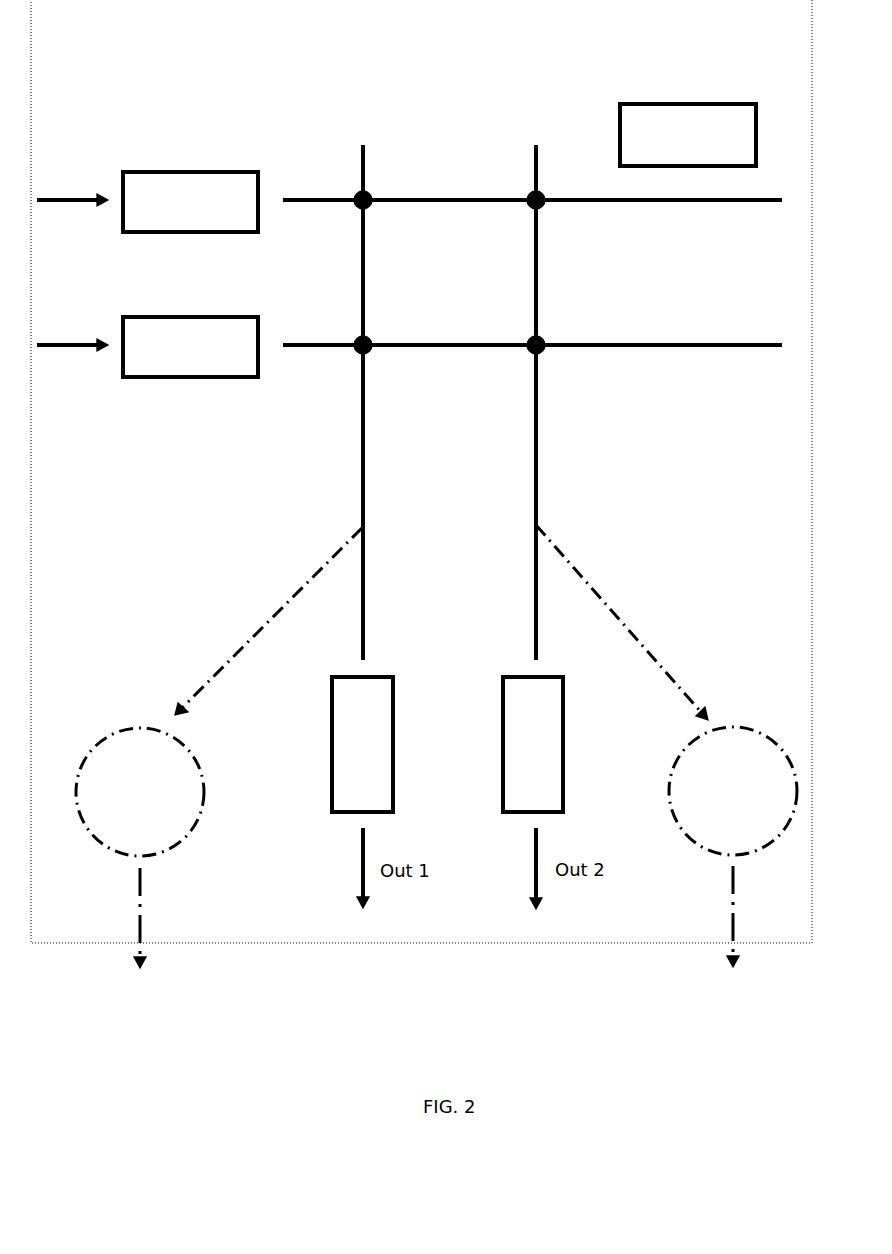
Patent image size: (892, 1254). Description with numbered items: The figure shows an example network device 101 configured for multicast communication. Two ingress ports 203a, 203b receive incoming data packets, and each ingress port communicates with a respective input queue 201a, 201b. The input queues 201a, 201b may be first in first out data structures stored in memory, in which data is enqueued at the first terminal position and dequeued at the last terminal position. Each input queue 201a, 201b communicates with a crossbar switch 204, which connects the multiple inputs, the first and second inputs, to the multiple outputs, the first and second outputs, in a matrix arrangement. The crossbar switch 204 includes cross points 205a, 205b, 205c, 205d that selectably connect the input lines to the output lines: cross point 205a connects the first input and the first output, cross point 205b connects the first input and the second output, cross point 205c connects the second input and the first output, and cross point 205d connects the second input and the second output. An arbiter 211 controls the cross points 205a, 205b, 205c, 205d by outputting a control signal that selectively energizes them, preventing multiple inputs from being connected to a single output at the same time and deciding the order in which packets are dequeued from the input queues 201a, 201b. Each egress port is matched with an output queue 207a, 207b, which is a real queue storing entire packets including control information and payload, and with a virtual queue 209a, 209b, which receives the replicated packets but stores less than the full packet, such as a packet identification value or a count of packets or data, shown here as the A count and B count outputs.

The network device 101 is at (108, 30).
The input queue 201a is at (203, 172).
The input queue 201b is at (203, 317).
The ingress port 203a is at (53, 202).
The ingress port 203b is at (53, 348).
The crossbar switch 204 is at (510, 96).
The cross point 205a is at (358, 192).
The cross point 205b is at (531, 192).
The cross point 205c is at (358, 337).
The cross point 205d is at (531, 337).
The output queue 207a is at (393, 745).
The output queue 207b is at (563, 742).
The virtual queue 209a is at (219, 769).
The virtual queue 209b is at (666, 770).
The arbiter 211 is at (702, 104).